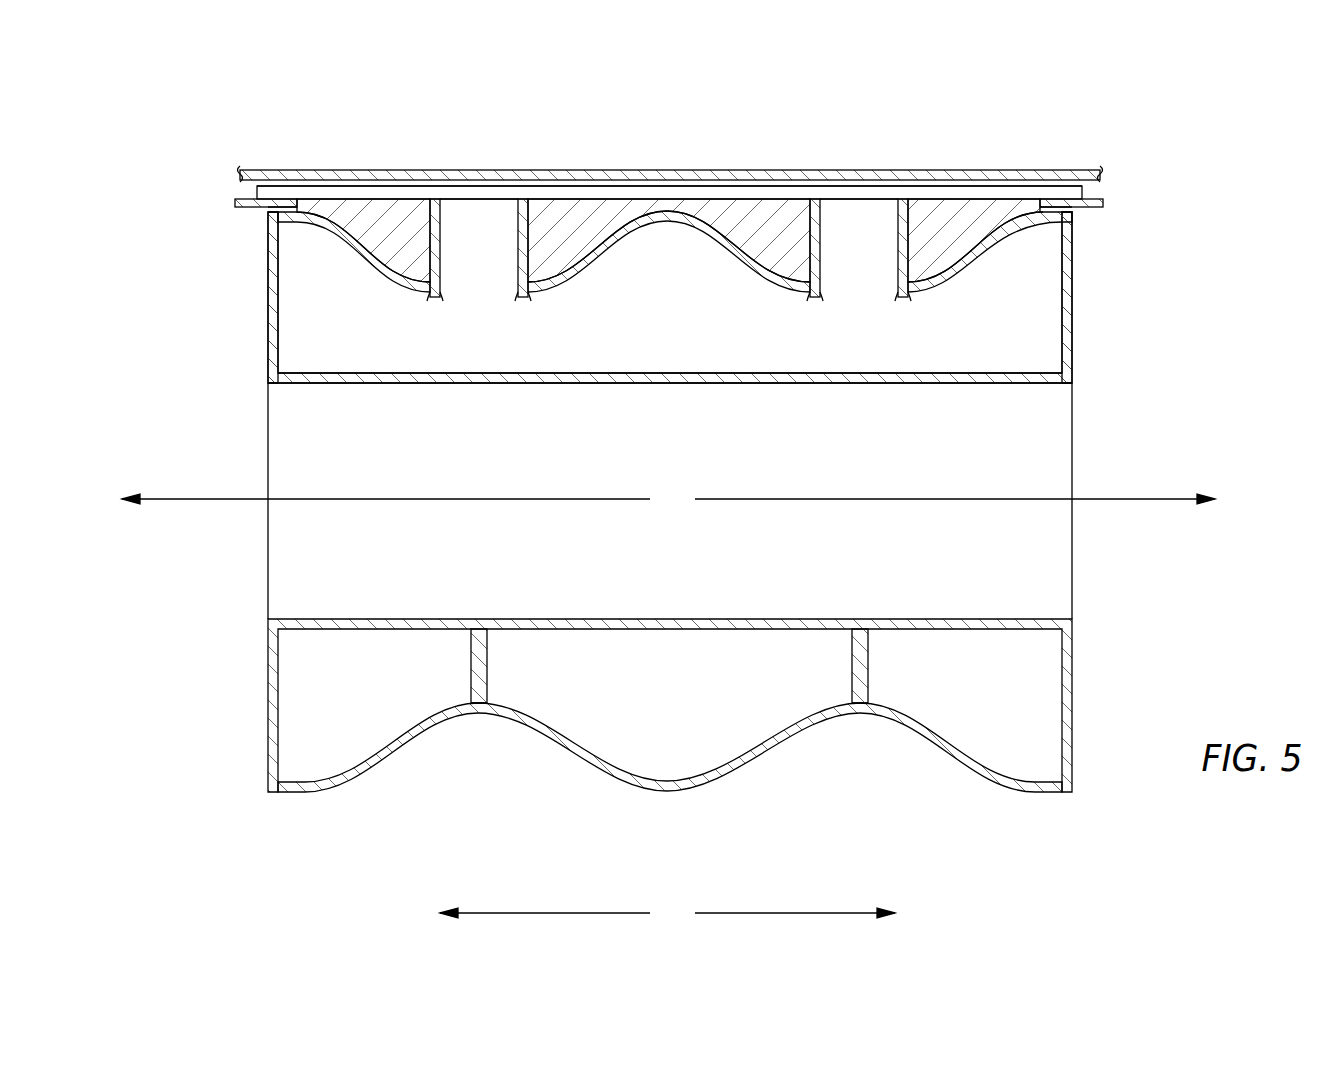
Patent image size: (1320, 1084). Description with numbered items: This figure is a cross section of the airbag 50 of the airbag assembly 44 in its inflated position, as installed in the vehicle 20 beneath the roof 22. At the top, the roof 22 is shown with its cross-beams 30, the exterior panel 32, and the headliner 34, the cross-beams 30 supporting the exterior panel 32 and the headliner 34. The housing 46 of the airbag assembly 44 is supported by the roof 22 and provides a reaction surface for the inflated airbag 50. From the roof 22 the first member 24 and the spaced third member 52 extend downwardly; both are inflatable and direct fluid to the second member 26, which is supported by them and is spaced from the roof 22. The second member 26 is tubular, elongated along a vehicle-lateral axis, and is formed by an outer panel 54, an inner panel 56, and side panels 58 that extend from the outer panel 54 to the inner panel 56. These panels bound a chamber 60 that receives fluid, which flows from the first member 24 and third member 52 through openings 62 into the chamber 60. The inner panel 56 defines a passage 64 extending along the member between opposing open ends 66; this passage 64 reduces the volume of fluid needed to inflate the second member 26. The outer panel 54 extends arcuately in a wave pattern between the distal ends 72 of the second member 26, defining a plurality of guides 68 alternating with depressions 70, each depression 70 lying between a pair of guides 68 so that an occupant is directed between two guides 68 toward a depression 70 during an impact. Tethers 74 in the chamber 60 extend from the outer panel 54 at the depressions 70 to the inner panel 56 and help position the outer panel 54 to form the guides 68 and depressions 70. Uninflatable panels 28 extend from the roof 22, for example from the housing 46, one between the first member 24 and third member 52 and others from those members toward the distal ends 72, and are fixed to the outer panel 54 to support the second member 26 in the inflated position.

The vehicle 20 is at (310, 116).
The roof 22 is at (688, 173).
The first member 24 is at (438, 222).
The second member 26 is at (669, 534).
The uninflatable panel 28 is at (385, 215).
The cross-beams 30 is at (775, 193).
The exterior panel 32 is at (724, 170).
The headliner 34 is at (1092, 207).
The airbag assembly 44 is at (168, 289).
The housing 46 is at (635, 192).
The airbag 50 is at (1172, 289).
The third member 52 is at (900, 222).
The outer panel 54 is at (362, 248).
The inner panel 56 is at (395, 385).
The side panels 58 is at (268, 330).
The chamber 60 is at (658, 340).
The openings 62 is at (470, 275).
The passage 64 is at (658, 448).
The open ends 66 is at (268, 577).
The guides 68 is at (282, 216).
The depressions 70 is at (436, 300).
The distal ends 72 is at (268, 207).
The tethers 74 is at (470, 678).